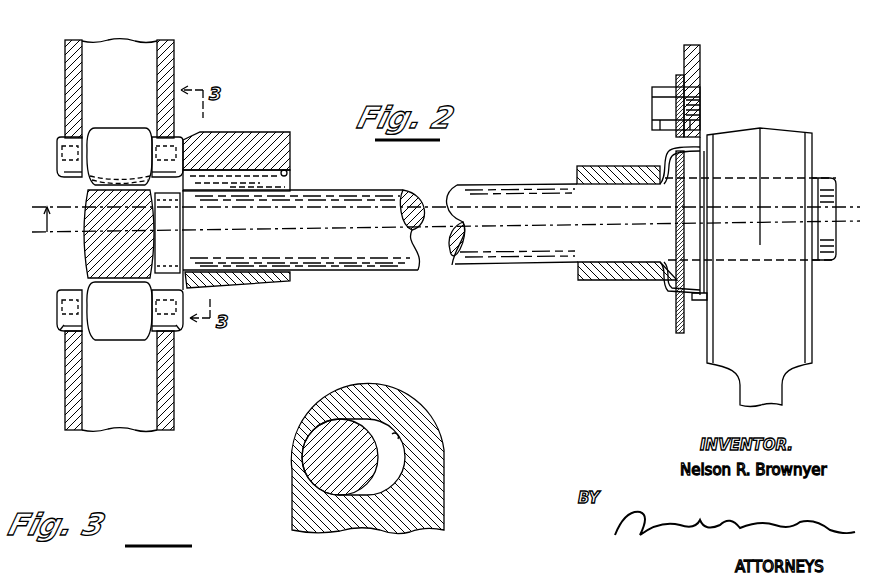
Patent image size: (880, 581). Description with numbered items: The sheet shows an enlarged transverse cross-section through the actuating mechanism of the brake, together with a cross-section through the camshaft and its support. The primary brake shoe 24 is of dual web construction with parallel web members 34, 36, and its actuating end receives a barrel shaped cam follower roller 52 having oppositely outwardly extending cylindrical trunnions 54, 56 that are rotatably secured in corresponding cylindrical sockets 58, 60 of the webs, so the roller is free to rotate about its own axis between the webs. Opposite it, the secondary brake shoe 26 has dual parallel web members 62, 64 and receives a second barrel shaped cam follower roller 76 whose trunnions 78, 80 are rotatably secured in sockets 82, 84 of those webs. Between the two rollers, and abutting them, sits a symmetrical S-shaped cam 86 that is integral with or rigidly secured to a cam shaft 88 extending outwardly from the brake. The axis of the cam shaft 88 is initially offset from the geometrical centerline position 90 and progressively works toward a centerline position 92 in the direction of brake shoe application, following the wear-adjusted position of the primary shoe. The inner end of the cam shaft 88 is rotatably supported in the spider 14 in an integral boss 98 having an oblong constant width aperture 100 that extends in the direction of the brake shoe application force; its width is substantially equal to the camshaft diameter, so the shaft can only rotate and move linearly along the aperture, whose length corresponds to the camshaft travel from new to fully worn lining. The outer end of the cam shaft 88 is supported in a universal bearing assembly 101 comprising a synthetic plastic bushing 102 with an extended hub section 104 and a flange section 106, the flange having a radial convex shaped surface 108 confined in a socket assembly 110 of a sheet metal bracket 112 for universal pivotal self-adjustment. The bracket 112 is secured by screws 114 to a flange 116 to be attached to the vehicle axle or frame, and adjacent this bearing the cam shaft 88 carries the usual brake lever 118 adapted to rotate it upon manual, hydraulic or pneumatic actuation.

In FIG. 2, the spider 14 is at (256, 134).
In FIG. 2, the primary brake shoe 24 is at (139, 69).
In FIG. 2, the secondary brake shoe 26 is at (139, 400).
In FIG. 2, the web member 34 is at (78, 77).
In FIG. 2, the web member 36 is at (174, 65).
In FIG. 2, the cam follower roller 52 is at (120, 128).
In FIG. 2, the trunnion 54 is at (66, 184).
In FIG. 2, the trunnion 56 is at (178, 167).
In FIG. 2, the socket 58 is at (65, 143).
In FIG. 2, the socket 60 is at (160, 144).
In FIG. 2, the web member 62 is at (82, 390).
In FIG. 2, the web member 64 is at (175, 390).
In FIG. 2, the cam follower roller 76 is at (113, 330).
In FIG. 2, the trunnion 78 is at (66, 298).
In FIG. 2, the trunnion 80 is at (185, 297).
In FIG. 2, the socket 82 is at (66, 326).
In FIG. 2, the socket 84 is at (183, 328).
In FIG. 2, the S-shaped cam 86 is at (97, 250).
In FIG. 2, the cam shaft 88 is at (380, 215).
In FIG. 3, the cam shaft 88 is at (315, 443).
In FIG. 2, the centerline position 90 is at (318, 235).
In FIG. 2, the centerline position 92 is at (330, 205).
In FIG. 2, the boss 98 is at (279, 138).
In FIG. 3, the boss 98 is at (402, 405).
In FIG. 2, the oblong aperture 100 is at (290, 171).
In FIG. 3, the oblong aperture 100 is at (400, 438).
In FIG. 2, the universal bearing assembly 101 is at (628, 290).
In FIG. 2, the bushing 102 is at (610, 295).
In FIG. 2, the hub section 104 is at (600, 165).
In FIG. 2, the flange section 106 is at (663, 292).
In FIG. 2, the convex shaped surface 108 is at (658, 154).
In FIG. 2, the socket assembly 110 is at (706, 297).
In FIG. 2, the sheet metal bracket 112 is at (678, 75).
In FIG. 2, the screws 114 is at (658, 108).
In FIG. 2, the flange 116 is at (700, 63).
In FIG. 2, the brake lever 118 is at (800, 293).